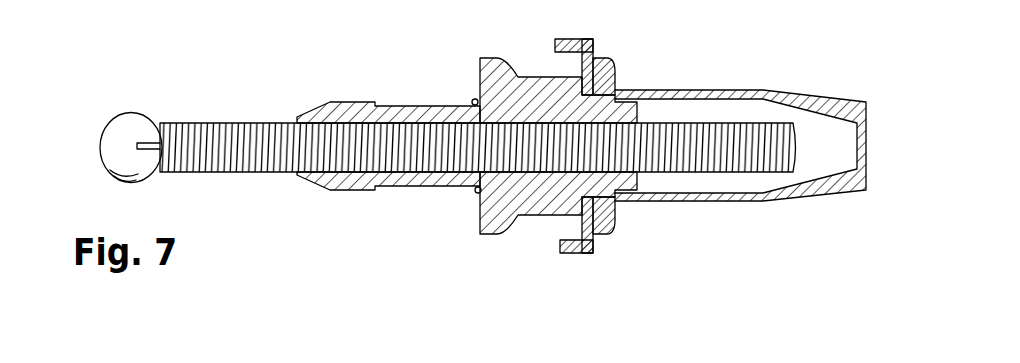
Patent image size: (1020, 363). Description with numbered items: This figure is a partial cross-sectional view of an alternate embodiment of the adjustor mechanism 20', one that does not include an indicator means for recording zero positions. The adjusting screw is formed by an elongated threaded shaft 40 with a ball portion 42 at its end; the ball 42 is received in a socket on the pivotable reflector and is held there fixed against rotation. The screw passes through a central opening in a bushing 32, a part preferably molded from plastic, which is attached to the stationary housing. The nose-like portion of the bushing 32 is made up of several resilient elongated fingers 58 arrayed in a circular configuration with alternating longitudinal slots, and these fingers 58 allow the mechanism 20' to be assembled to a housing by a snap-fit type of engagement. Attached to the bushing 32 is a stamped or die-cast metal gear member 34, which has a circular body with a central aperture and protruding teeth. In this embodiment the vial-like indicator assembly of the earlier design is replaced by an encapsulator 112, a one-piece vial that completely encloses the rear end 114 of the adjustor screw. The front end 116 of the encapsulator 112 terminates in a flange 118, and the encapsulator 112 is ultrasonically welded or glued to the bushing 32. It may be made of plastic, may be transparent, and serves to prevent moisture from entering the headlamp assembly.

The adjustor mechanism 20' is at (458, 148).
The ball portion 42 is at (122, 125).
The elongated threaded shaft 40 is at (225, 121).
The fingers 58 is at (365, 191).
The bushing 32 is at (537, 210).
The gear member 34 is at (577, 253).
The flange 118 is at (648, 38).
The front end of the encapsulator 116 is at (617, 213).
The encapsulator 112 is at (738, 107).
The rear end of the adjustor screw 114 is at (723, 168).